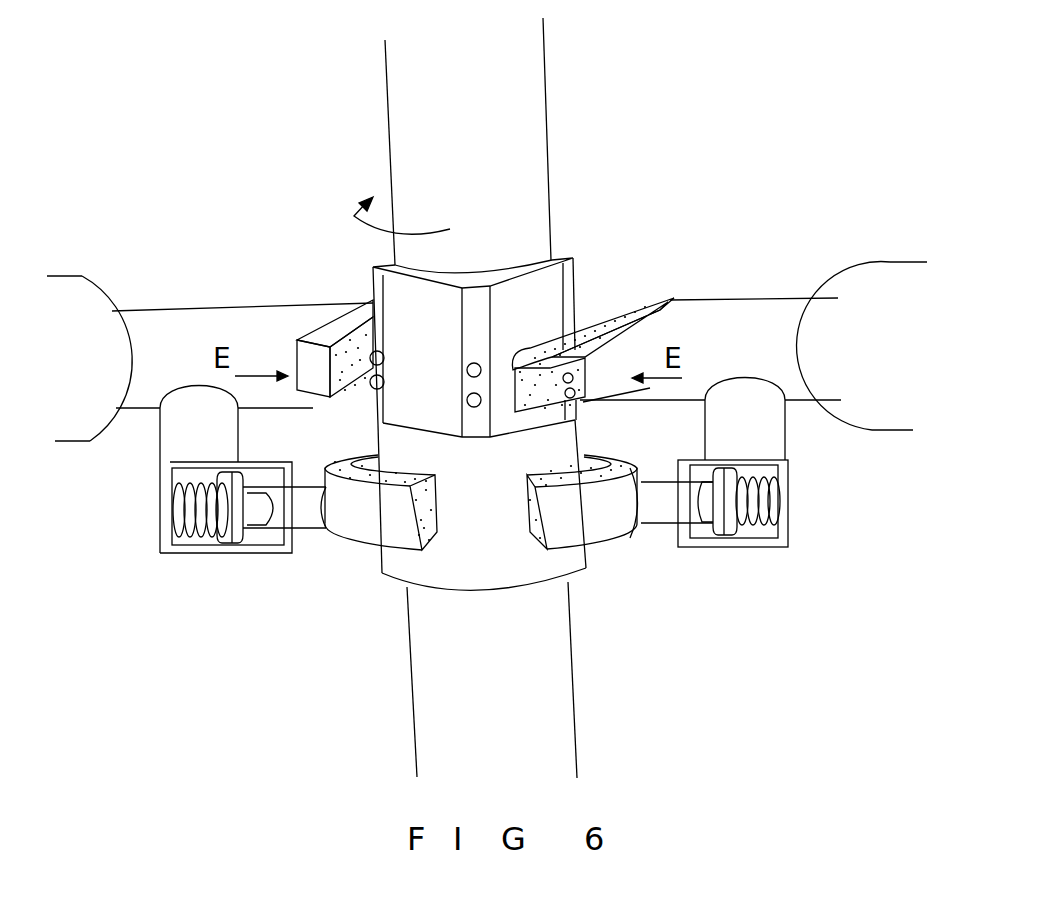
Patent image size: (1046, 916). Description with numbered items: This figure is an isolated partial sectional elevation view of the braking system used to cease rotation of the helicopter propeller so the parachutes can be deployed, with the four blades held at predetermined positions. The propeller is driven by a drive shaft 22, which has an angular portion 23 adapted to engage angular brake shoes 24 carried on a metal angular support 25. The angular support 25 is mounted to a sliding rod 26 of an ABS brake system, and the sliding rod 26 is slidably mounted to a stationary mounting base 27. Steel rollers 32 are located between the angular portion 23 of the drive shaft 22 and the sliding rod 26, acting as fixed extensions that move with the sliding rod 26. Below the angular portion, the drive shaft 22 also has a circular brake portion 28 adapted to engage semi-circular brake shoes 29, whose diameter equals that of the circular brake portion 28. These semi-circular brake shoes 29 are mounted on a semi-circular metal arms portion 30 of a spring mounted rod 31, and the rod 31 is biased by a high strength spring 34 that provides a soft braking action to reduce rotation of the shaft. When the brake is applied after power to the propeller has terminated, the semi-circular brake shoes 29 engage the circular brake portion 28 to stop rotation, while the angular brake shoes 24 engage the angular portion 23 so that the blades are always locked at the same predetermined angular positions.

The drive shaft 22 is at (492, 116).
The angular portion 23 is at (520, 308).
The angular brake shoes 24 is at (627, 300).
The metal angular support 25 is at (363, 305).
The sliding rod 26 is at (272, 355).
The stationary mounting base 27 is at (877, 322).
The circular brake portion 28 is at (487, 518).
The semi-circular brake shoes 29 is at (410, 488).
The semi-circular metal arms portion 30 is at (605, 477).
The spring mounted rod 31 is at (262, 507).
The steel rollers 32 is at (476, 403).
The high strength spring 34 is at (205, 507).